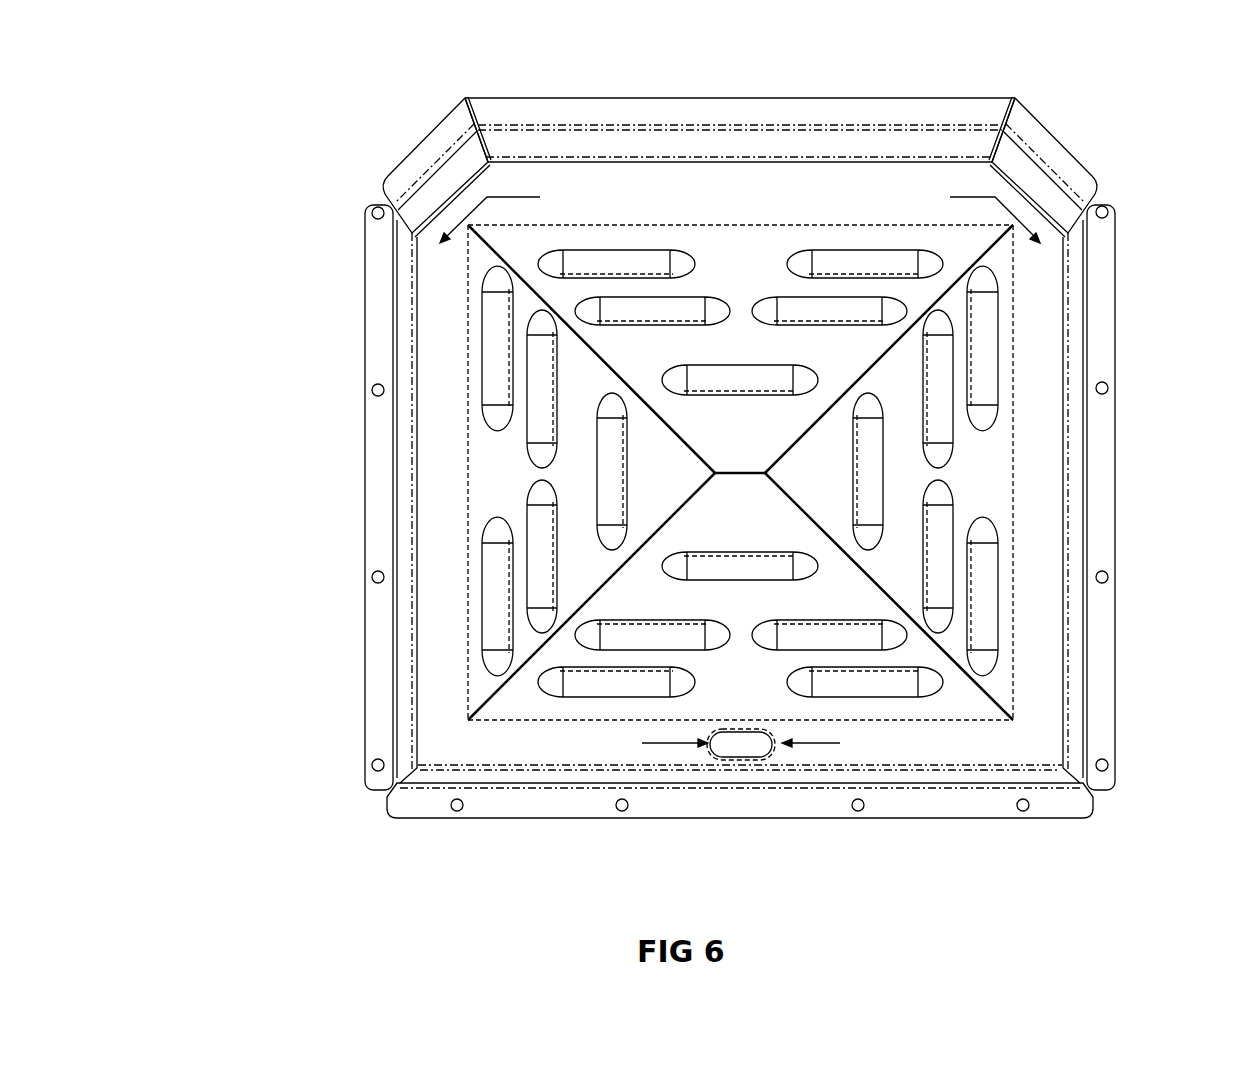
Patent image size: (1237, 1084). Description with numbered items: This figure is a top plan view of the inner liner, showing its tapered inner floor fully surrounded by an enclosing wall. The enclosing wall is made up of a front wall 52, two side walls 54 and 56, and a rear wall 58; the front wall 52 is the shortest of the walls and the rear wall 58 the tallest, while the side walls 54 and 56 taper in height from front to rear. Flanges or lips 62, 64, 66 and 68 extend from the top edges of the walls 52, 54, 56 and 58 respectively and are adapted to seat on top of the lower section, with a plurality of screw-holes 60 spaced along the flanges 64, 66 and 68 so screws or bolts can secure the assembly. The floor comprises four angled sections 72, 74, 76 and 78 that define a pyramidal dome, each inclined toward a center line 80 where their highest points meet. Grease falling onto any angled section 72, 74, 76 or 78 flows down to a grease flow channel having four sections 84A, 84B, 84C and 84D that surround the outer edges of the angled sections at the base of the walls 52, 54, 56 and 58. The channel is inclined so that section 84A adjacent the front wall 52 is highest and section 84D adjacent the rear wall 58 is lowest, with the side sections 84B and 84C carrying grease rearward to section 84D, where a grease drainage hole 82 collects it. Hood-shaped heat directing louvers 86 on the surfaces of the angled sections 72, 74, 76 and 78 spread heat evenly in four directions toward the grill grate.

The front wall 52 is at (713, 143).
The side wall 54 is at (1068, 460).
The side wall 56 is at (405, 352).
The rear wall 58 is at (785, 775).
The screw-holes 60 is at (1110, 577).
The flange 62 is at (848, 110).
The flange 64 is at (1102, 497).
The flange 66 is at (377, 480).
The flange 68 is at (740, 807).
The angled section 72 is at (760, 453).
The angled section 74 is at (478, 690).
The angled section 76 is at (1048, 632).
The angled section 78 is at (862, 707).
The center line 80 is at (738, 477).
The grease drainage hole 82 is at (720, 757).
The grease flow channel section 84A is at (752, 190).
The grease flow channel section 84B is at (437, 541).
The grease flow channel section 84C is at (1043, 650).
The grease flow channel section 84D is at (985, 753).
The heat directing louvers 86 is at (490, 355).